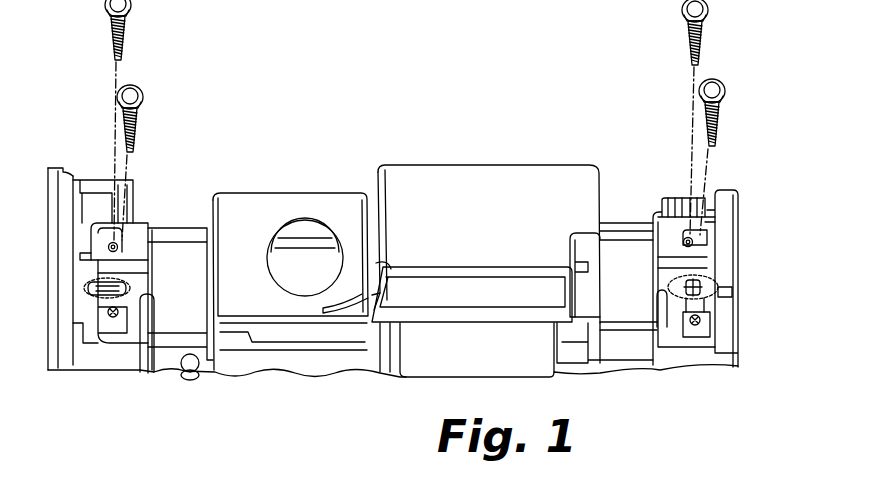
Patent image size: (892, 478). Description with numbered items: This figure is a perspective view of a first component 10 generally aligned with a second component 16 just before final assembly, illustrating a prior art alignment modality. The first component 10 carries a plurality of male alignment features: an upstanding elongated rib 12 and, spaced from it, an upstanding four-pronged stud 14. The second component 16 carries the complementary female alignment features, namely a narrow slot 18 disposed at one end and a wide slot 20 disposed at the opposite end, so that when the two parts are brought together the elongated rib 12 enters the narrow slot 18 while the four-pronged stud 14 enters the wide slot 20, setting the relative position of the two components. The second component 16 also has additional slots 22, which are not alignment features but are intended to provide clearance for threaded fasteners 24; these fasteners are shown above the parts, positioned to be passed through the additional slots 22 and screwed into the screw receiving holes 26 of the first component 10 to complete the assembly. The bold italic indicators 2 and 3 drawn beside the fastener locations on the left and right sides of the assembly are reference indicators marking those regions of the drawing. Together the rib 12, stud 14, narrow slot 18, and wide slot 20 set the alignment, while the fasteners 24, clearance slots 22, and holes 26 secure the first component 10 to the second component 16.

The first component 10 is at (697, 378).
The upstanding elongated rib 12 is at (90, 292).
The upstanding four-pronged stud 14 is at (702, 292).
The second component 16 is at (265, 186).
The narrow slot 18 is at (119, 298).
The wide slot 20 is at (686, 330).
The additional slots 22 is at (90, 249).
The threaded fasteners 24 is at (141, 116).
The screw receiving holes 26 is at (122, 237).
The section view indicator FIG. 2 is at (88, 288).
The section view indicator FIG. 3 is at (700, 286).